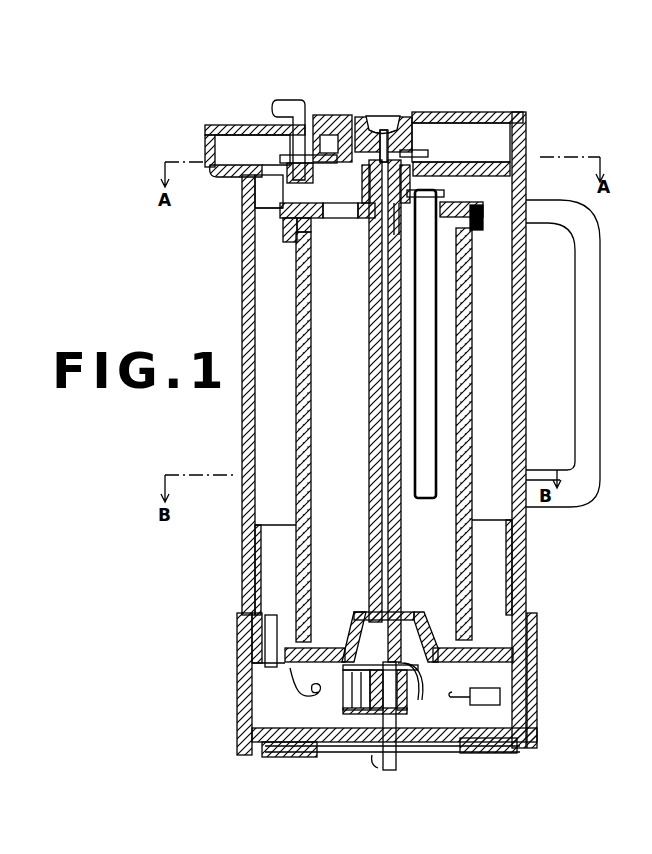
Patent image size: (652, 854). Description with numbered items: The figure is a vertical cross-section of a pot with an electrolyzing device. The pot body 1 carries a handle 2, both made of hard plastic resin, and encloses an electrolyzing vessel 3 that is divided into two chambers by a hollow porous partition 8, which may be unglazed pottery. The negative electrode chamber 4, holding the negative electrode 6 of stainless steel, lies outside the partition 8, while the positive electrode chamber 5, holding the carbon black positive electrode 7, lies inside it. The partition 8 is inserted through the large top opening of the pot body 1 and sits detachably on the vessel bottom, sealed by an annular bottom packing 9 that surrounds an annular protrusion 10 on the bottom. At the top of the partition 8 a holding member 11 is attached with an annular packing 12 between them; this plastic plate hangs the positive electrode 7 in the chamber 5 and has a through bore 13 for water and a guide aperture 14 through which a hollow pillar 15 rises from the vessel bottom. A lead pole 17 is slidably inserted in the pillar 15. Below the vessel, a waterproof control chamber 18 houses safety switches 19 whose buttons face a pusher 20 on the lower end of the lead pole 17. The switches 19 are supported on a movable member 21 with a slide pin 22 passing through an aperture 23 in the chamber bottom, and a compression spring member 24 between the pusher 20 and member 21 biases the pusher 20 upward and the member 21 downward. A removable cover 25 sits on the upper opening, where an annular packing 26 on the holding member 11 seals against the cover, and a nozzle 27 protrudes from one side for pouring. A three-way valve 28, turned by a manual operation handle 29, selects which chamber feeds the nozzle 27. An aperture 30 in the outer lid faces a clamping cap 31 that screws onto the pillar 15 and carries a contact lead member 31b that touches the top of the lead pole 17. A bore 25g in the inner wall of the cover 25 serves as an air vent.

The pot body 1 is at (243, 424).
The handle 2 is at (593, 355).
The electrolyzing vessel 3 is at (507, 337).
The negative electrode chamber 4 is at (504, 392).
The positive electrode chamber 5 is at (356, 456).
The negative electrode 6 is at (272, 570).
The positive electrode 7 is at (418, 502).
The porous partition 8 is at (296, 346).
The bottom packing 9 is at (322, 636).
The annular protrusion 10 is at (482, 646).
The holding member 11 is at (283, 228).
The annular packing 12 is at (310, 226).
The through bore 13 is at (346, 210).
The guide aperture 14 is at (407, 227).
The hollow pillar 15 is at (372, 300).
The lead pole 17 is at (386, 366).
The control chamber 18 is at (258, 696).
The safety switches 19 is at (348, 696).
The pusher 20 is at (364, 672).
The movable member 21 is at (408, 700).
The slide pin 22 is at (403, 760).
The aperture 23 is at (388, 762).
The compression spring member 24 is at (426, 676).
The cover 25 is at (473, 104).
The bore 25g is at (436, 166).
The annular packing 26 is at (300, 178).
The nozzle 27 is at (232, 175).
The three-way valve 28 is at (310, 98).
The manual operation handle 29 is at (280, 110).
The aperture 30 is at (352, 116).
The clamping cap 31 is at (392, 118).
The contact lead member 31b is at (381, 128).